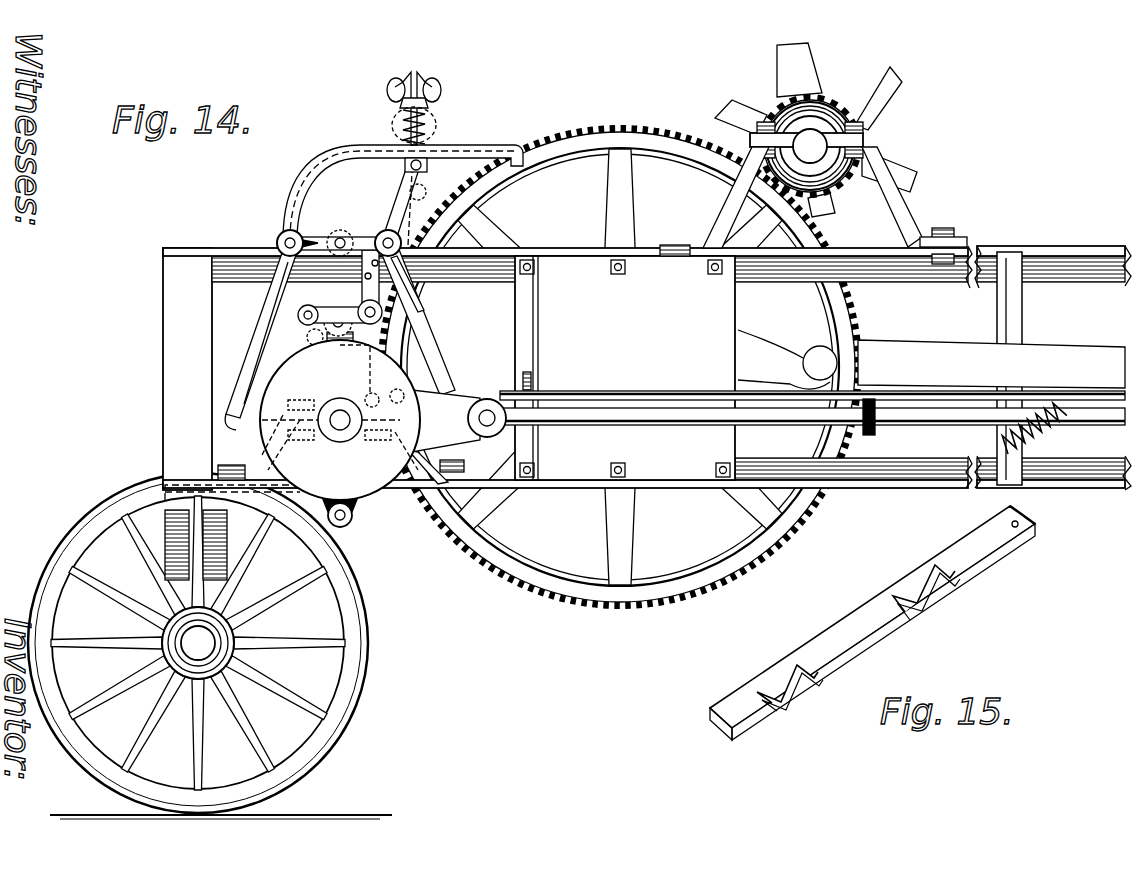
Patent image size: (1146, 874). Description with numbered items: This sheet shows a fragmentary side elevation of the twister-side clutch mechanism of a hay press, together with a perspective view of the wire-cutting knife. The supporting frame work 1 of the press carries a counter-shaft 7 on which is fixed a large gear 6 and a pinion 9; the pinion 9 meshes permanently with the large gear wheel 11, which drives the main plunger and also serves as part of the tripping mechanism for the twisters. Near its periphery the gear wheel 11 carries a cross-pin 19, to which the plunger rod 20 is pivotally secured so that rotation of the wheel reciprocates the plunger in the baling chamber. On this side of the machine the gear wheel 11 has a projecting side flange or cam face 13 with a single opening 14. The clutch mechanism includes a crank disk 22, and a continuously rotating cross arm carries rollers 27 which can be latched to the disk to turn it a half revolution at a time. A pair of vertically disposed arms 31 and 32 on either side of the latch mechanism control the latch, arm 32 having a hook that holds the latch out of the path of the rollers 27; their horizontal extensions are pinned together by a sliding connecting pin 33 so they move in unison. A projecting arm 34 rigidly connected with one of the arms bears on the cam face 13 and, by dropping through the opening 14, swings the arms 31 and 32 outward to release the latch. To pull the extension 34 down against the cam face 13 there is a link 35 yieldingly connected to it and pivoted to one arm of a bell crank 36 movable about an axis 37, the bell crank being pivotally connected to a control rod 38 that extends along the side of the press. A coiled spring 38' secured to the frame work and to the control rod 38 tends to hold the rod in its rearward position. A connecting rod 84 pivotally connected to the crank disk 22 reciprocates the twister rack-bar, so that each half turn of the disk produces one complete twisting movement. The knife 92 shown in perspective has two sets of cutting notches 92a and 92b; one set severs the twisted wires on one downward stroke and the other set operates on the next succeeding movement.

In FIG. 14, the supporting frame work 1 is at (1068, 479).
In FIG. 14, the large gear 6 is at (790, 63).
In FIG. 14, the counter-shaft 7 is at (816, 147).
In FIG. 14, the pinion 9 is at (823, 100).
In FIG. 14, the large gear wheel 11 is at (575, 598).
In FIG. 14, the flange or cam face 13 is at (597, 150).
In FIG. 14, the opening 14 is at (529, 168).
In FIG. 14, the cross-pin 19 is at (812, 362).
In FIG. 14, the plunger rod 20 is at (991, 364).
In FIG. 14, the crank disk 22 is at (383, 420).
In FIG. 14, the roller 27 is at (310, 310).
In FIG. 14, the arm 31 is at (430, 348).
In FIG. 14, the arm 32 is at (254, 332).
In FIG. 14, the sliding connecting pin 33 is at (340, 240).
In FIG. 14, the projecting arm 34 is at (330, 160).
In FIG. 14, the link 35 is at (393, 198).
In FIG. 14, the bell crank 36 is at (358, 344).
In FIG. 14, the axis 37 is at (382, 322).
In FIG. 14, the control rod 38 is at (812, 382).
In FIG. 14, the coiled spring 38' is at (1055, 430).
In FIG. 14, the connecting rod 84 is at (942, 416).
In FIG. 15, the knife 92 is at (845, 637).
In FIG. 15, the cutting notch 92a is at (925, 608).
In FIG. 15, the cutting notch 92b is at (773, 706).